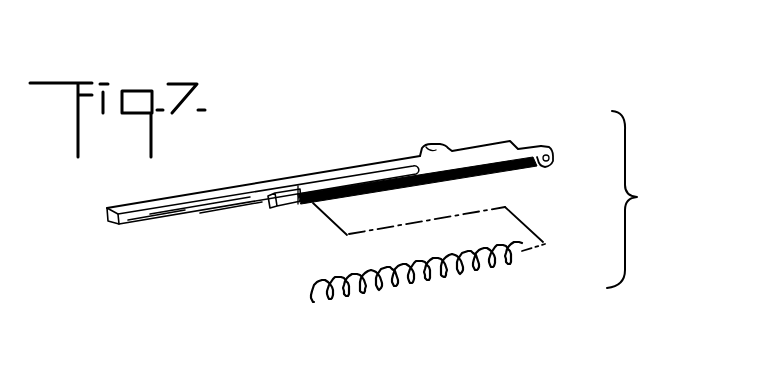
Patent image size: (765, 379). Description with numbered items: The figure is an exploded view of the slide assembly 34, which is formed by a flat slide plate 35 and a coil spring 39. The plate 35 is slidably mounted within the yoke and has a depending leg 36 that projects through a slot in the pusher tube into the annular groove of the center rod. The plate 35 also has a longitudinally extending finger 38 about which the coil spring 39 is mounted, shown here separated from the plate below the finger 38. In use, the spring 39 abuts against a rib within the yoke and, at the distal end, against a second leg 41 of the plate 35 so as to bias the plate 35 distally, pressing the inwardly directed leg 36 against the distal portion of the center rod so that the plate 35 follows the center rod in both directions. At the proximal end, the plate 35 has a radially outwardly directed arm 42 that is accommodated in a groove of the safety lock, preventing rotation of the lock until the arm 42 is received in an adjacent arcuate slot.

The slide assembly 34 is at (684, 207).
The flat slide plate 35 is at (228, 190).
The depending leg 36 is at (432, 145).
The longitudinally extending finger 38 is at (362, 194).
The coil spring 39 is at (413, 283).
The second leg 41 is at (290, 203).
The radially outwardly directed arm 42 is at (550, 158).